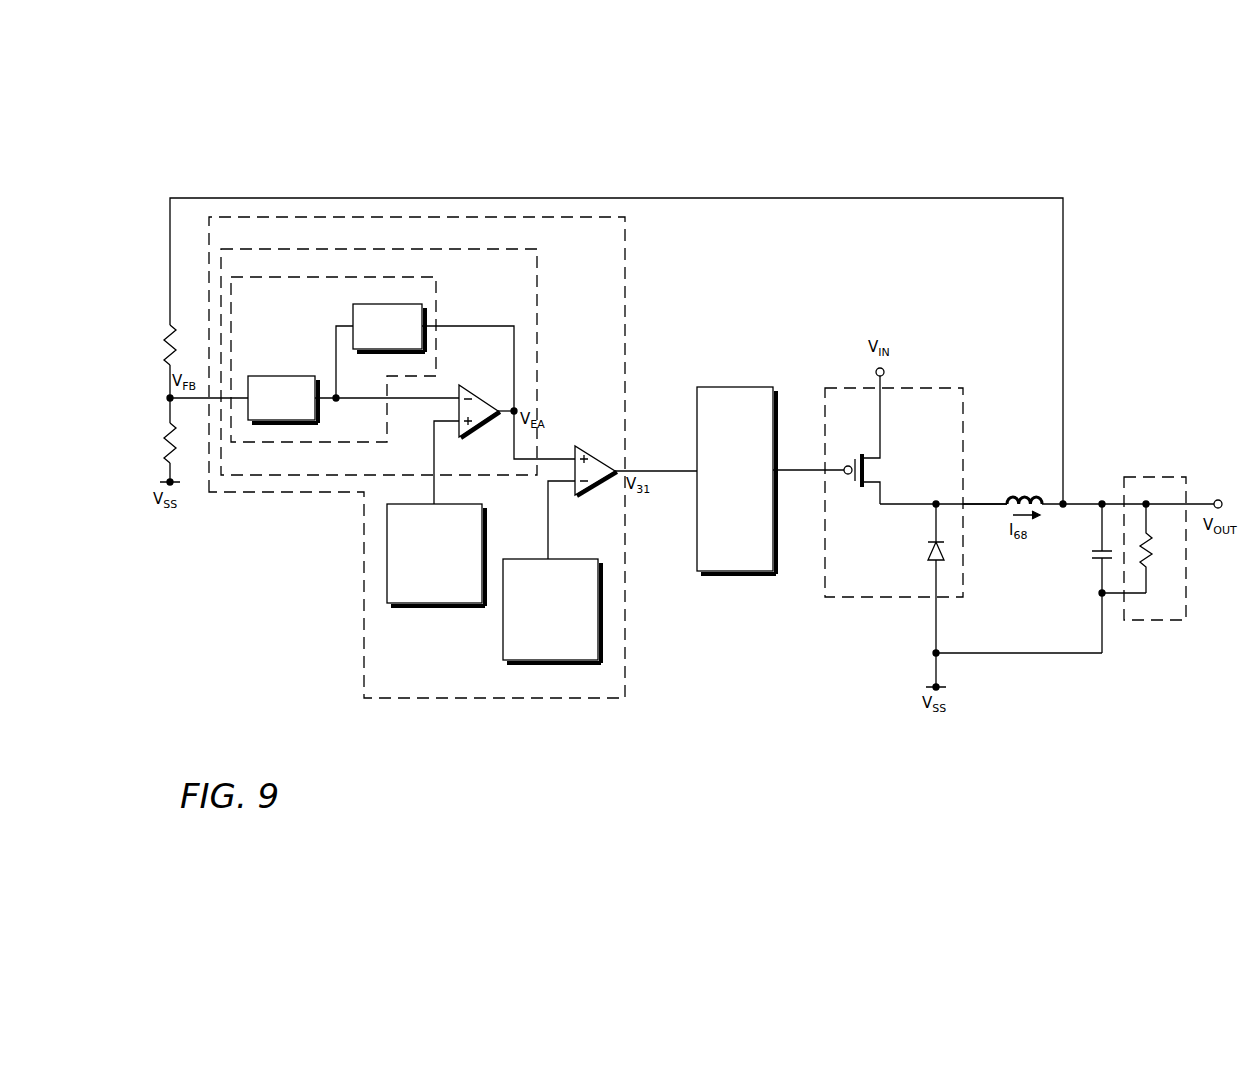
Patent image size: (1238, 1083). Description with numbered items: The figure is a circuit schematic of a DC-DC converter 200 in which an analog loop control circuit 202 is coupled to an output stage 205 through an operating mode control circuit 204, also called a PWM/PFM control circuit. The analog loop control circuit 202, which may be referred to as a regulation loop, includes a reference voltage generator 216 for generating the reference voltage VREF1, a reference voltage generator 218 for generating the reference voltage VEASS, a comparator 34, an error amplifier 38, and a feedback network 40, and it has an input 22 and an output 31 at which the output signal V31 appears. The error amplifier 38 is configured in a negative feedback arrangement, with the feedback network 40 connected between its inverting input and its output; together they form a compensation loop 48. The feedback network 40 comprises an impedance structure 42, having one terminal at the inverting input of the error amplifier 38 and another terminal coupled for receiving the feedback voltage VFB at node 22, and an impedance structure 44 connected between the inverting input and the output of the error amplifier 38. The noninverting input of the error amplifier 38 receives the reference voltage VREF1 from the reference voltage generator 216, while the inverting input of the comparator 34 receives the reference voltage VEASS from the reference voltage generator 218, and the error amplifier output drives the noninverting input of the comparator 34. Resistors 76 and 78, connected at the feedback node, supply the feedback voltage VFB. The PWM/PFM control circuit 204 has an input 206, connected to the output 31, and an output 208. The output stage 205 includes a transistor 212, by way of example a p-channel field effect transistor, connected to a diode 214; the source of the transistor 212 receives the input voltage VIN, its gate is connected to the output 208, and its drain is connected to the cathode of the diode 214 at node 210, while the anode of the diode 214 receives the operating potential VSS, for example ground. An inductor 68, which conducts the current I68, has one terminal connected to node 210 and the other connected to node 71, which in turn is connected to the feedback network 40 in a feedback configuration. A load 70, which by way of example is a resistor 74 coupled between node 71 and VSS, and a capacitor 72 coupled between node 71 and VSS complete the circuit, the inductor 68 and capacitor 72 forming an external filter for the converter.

The DC-DC converter 200 is at (258, 738).
The analog loop control circuit 202 is at (276, 496).
The operating mode control circuit 204 is at (736, 386).
The output stage 205 is at (856, 387).
The input 206 is at (687, 473).
The output 208 is at (799, 469).
The node 210 is at (987, 498).
The transistor 212 is at (871, 462).
The diode 214 is at (928, 548).
The reference voltage generator 216 is at (428, 606).
The reference voltage generator 218 is at (554, 663).
The input 22 is at (167, 398).
The output 31 is at (632, 462).
The comparator 34 is at (592, 445).
The error amplifier 38 is at (476, 391).
The feedback network 40 is at (354, 277).
The impedance structure 42 is at (281, 377).
The impedance structure 44 is at (393, 306).
The compensation loop 48 is at (345, 248).
The inductor 68 is at (1026, 490).
The load 70 is at (1164, 477).
The node 71 is at (1066, 510).
The capacitor 72 is at (1096, 558).
The resistor 74 is at (1154, 544).
The resistor 76 is at (158, 326).
The resistor 78 is at (166, 434).